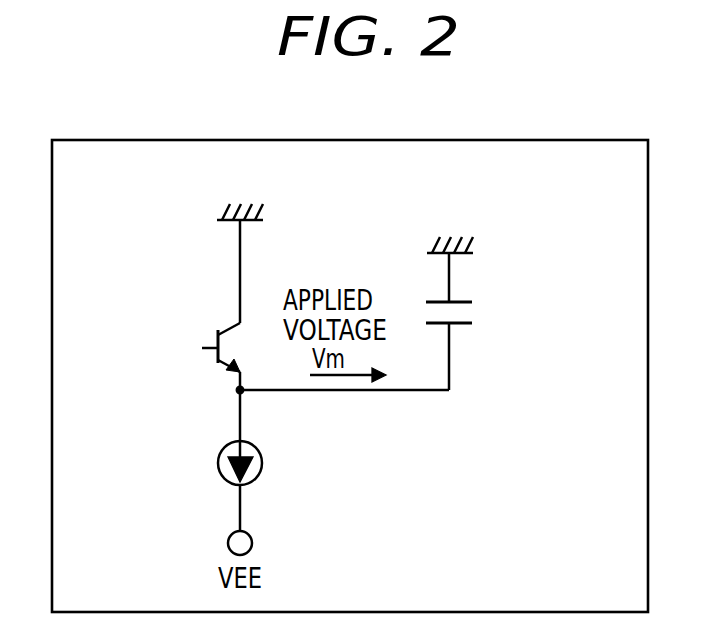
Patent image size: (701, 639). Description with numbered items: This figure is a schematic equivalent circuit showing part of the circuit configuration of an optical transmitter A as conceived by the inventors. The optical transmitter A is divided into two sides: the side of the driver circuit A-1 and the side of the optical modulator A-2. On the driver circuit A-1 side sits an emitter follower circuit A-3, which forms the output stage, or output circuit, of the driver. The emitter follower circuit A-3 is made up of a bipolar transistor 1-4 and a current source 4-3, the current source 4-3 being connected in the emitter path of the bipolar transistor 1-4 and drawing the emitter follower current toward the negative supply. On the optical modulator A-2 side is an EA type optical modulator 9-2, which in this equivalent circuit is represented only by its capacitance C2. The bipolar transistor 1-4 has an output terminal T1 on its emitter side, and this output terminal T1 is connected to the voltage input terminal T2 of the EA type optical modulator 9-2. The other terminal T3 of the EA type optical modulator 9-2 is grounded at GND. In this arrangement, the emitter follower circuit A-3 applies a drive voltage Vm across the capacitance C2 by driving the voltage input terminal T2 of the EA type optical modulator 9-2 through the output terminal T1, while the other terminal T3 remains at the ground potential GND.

The optical transmitter A is at (260, 140).
The driver circuit A-1 is at (289, 212).
The optical modulator A-2 is at (413, 217).
The emitter follower circuit A-3 is at (198, 348).
The bipolar transistor 1-4 is at (216, 331).
The current source 4-3 is at (218, 463).
The EA type optical modulator 9-2 is at (494, 312).
The capacitance C2 is at (520, 323).
The output terminal T1 is at (237, 390).
The voltage input terminal T2 is at (450, 330).
The other terminal T3 is at (450, 296).
The ground GND is at (476, 243).